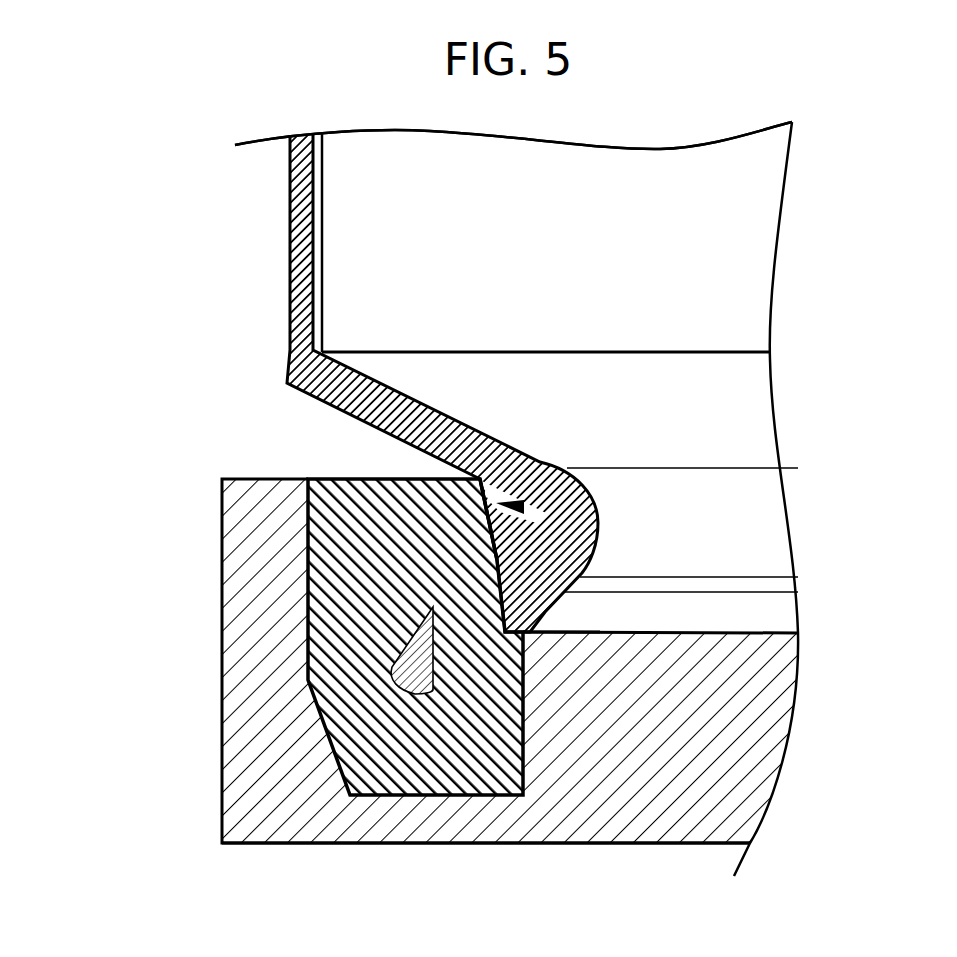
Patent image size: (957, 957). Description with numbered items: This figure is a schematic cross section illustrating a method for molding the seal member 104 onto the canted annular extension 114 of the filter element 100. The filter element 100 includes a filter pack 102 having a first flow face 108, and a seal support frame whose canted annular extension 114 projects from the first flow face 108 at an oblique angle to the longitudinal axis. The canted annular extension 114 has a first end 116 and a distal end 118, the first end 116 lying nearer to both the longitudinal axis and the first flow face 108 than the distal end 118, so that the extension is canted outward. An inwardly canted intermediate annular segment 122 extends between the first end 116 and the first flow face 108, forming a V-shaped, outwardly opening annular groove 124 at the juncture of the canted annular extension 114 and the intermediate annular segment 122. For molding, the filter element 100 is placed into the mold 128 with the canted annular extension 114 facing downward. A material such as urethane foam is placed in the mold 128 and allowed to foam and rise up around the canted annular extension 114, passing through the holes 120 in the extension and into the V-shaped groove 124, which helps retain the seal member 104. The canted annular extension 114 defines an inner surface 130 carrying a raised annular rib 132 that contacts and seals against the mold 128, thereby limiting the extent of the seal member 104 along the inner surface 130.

The filter element 100 is at (748, 118).
The filter pack 102 is at (752, 237).
The seal member 104 is at (367, 772).
The first flow face 108 is at (720, 355).
The canted annular extension 114 is at (500, 520).
The first end 116 is at (598, 518).
The distal end 118 is at (403, 677).
The holes 120 is at (469, 643).
The inwardly canted intermediate annular segment 122 is at (373, 427).
The V-shaped annular groove 124 is at (493, 502).
The mold 128 is at (640, 828).
The inner surface 130 is at (580, 583).
The raised annular rib 132 is at (542, 645).